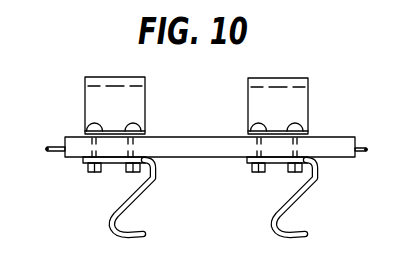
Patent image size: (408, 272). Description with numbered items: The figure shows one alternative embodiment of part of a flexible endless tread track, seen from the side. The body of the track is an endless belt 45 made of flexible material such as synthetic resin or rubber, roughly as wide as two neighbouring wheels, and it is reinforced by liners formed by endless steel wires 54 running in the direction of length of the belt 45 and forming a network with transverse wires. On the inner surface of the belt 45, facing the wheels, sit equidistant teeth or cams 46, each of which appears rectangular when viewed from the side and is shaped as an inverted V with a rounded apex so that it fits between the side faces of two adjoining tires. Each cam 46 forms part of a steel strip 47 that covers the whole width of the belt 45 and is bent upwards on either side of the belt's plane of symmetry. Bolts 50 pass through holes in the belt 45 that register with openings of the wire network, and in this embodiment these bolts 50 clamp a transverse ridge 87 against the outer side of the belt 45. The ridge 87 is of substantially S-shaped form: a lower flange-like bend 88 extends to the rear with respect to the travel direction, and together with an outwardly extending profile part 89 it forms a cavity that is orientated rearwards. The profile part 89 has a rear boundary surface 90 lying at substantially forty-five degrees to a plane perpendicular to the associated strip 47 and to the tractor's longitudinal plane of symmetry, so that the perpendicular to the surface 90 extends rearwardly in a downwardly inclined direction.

The endless belt 45 is at (205, 137).
The tooth or cam 46 is at (136, 98).
The steel strip 47 is at (111, 128).
The bolts 50 is at (108, 171).
The endless steel wires 54 is at (63, 140).
The transverse ridge 87 is at (113, 206).
The lower flange-like bend 88 is at (140, 235).
The outwardly extending profile part 89 is at (151, 181).
The rear boundary surface 90 is at (133, 194).